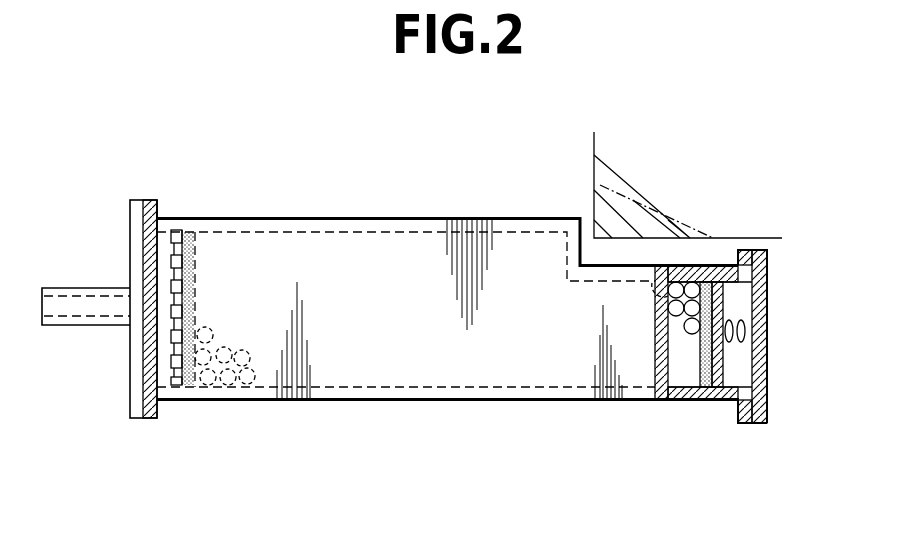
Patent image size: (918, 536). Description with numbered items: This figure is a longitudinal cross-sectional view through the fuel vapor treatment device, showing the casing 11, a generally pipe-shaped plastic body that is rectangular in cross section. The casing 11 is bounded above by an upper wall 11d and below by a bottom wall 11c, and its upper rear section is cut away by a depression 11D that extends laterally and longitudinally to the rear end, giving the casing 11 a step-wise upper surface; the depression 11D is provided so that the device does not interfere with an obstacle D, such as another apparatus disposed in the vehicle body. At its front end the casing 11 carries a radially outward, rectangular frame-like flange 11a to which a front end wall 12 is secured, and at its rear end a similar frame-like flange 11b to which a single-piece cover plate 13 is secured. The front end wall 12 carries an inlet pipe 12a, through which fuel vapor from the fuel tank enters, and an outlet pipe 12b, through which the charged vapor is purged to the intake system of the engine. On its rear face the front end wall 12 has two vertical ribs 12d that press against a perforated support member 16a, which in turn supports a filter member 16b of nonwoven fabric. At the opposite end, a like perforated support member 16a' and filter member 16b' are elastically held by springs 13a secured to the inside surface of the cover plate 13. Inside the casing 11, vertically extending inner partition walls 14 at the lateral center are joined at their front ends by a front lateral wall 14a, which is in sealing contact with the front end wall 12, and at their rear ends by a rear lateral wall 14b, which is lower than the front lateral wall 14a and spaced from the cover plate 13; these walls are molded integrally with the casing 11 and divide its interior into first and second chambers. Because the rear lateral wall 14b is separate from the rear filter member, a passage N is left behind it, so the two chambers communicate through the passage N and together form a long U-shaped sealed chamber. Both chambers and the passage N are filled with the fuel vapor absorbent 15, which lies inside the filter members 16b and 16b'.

The casing 11 is at (461, 306).
The front frame-like flange 11a is at (155, 202).
The rear frame-like flange 11b is at (745, 412).
The bottom wall 11c is at (388, 401).
The upper wall 11d is at (326, 218).
The depression 11D is at (592, 265).
The front end wall 12 is at (111, 331).
The inlet pipe 12a is at (77, 354).
The outlet pipe 12b is at (63, 327).
The ribs 12d is at (142, 265).
The cover plate 13 is at (765, 293).
The springs 13a is at (725, 320).
The inner partition walls 14 is at (493, 368).
The front lateral wall 14a is at (147, 377).
The rear lateral wall 14b is at (662, 363).
The fuel vapor absorbent 15 is at (232, 355).
The perforated support member 16a is at (204, 265).
The filter member 16b is at (240, 276).
The perforated support member 16a' is at (781, 343).
The filter member 16b' is at (692, 380).
The passage N is at (660, 347).
The obstacle D is at (647, 207).